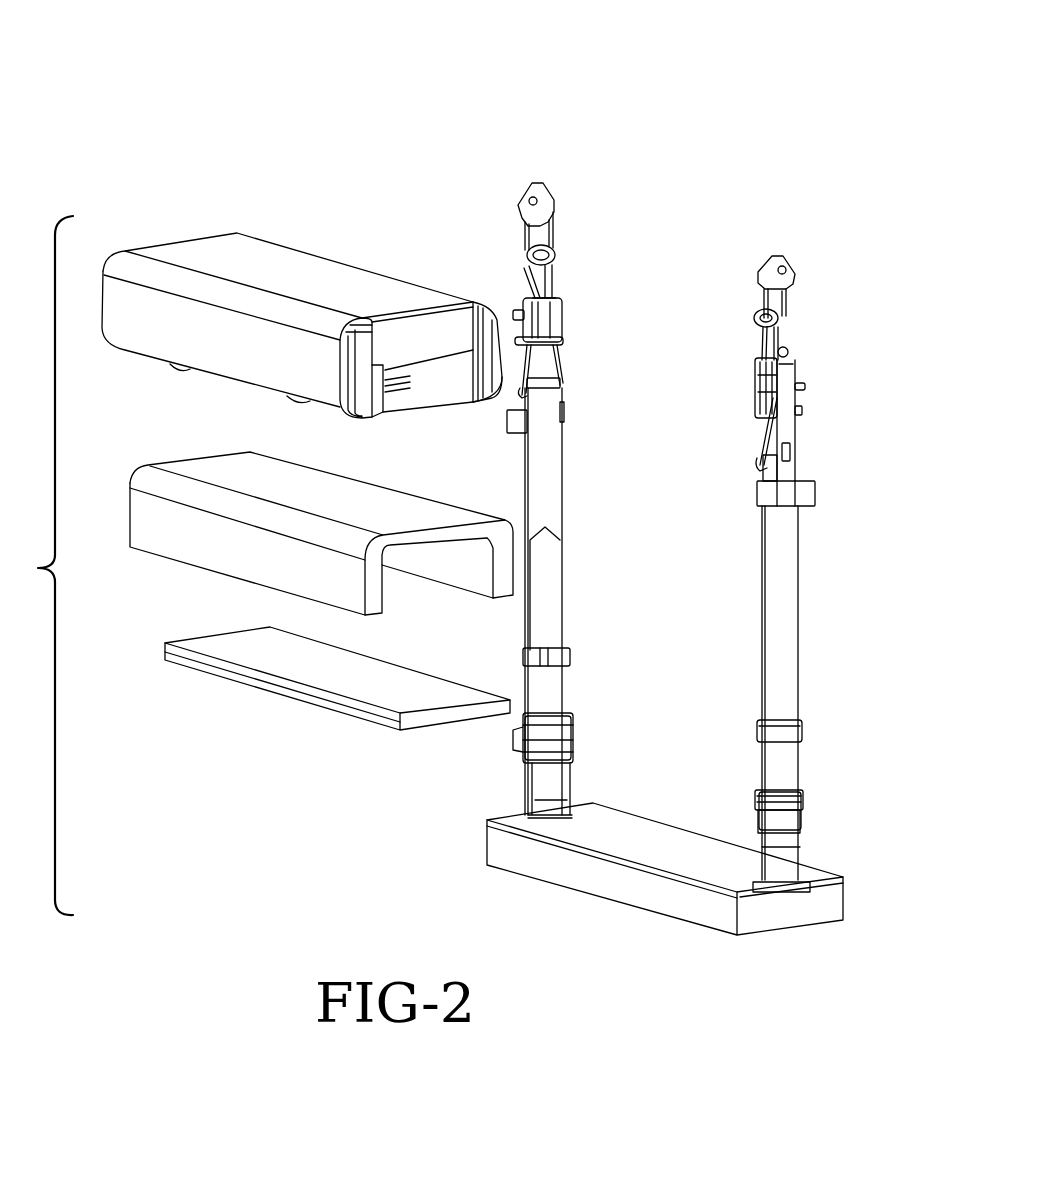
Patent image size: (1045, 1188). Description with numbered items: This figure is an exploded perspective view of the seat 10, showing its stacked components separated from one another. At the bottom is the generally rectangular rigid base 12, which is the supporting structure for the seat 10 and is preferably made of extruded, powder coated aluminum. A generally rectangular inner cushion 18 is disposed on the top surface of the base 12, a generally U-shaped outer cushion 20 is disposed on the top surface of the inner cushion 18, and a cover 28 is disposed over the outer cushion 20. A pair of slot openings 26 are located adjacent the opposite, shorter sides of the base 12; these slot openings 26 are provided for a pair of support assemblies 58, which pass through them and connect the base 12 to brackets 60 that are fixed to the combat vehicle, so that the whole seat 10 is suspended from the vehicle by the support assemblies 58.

The seat 10 is at (702, 135).
The rigid base 12 is at (605, 875).
The inner cushion 18 is at (248, 645).
The outer cushion 20 is at (235, 470).
The slot openings 26 is at (557, 805).
The cover 28 is at (272, 273).
The support assemblies 58 is at (566, 604).
The brackets 60 is at (548, 200).